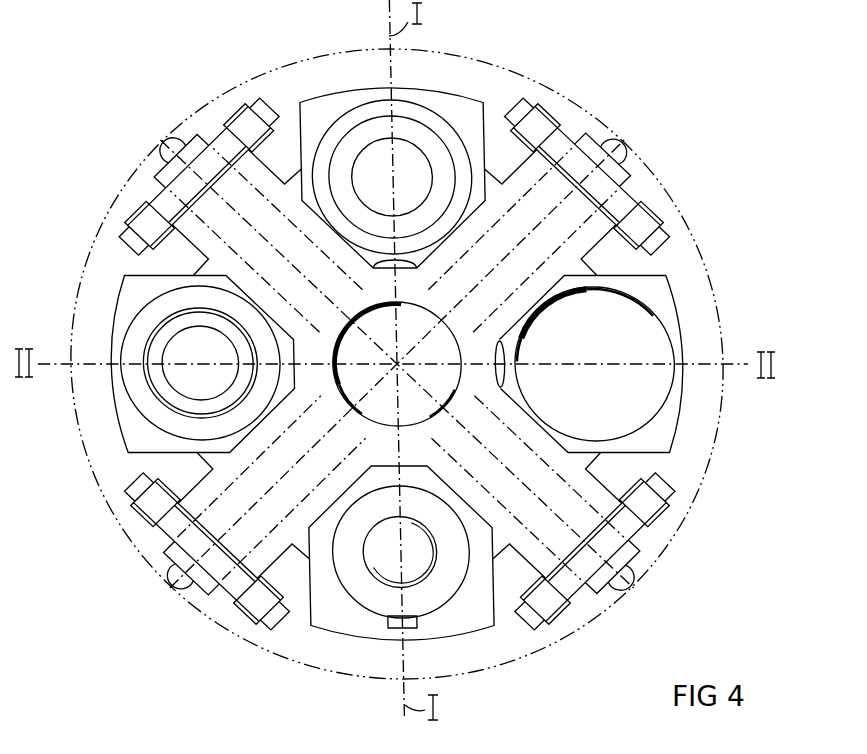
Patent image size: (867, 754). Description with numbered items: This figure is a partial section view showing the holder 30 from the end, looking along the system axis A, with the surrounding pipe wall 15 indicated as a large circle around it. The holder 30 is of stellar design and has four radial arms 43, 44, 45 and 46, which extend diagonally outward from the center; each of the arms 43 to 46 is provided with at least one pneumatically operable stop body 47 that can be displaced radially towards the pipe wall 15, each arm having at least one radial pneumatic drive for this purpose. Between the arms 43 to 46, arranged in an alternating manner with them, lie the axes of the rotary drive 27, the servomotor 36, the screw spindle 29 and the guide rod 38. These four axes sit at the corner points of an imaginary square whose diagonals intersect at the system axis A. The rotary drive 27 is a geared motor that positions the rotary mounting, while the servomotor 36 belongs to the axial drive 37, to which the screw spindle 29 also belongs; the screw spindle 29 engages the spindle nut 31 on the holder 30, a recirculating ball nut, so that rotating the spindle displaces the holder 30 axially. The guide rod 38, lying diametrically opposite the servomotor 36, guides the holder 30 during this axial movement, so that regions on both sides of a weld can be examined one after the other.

The pipe wall 15 is at (709, 262).
The rotary drive 27 is at (452, 117).
The screw spindle 29 is at (382, 538).
The holder 30 is at (506, 327).
The spindle nut 31 is at (444, 520).
The servomotor 36 is at (639, 404).
The axial drive 37 is at (670, 320).
The guide rod 38 is at (247, 402).
The arm 43 is at (538, 173).
The arm 44 is at (550, 557).
The arm 45 is at (258, 548).
The arm 46 is at (197, 230).
The stop body 47 is at (626, 144).
The system axis A is at (398, 362).